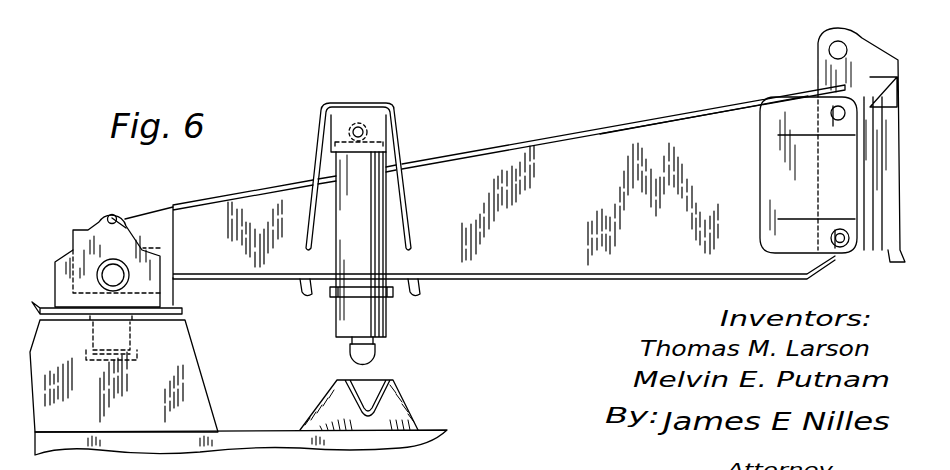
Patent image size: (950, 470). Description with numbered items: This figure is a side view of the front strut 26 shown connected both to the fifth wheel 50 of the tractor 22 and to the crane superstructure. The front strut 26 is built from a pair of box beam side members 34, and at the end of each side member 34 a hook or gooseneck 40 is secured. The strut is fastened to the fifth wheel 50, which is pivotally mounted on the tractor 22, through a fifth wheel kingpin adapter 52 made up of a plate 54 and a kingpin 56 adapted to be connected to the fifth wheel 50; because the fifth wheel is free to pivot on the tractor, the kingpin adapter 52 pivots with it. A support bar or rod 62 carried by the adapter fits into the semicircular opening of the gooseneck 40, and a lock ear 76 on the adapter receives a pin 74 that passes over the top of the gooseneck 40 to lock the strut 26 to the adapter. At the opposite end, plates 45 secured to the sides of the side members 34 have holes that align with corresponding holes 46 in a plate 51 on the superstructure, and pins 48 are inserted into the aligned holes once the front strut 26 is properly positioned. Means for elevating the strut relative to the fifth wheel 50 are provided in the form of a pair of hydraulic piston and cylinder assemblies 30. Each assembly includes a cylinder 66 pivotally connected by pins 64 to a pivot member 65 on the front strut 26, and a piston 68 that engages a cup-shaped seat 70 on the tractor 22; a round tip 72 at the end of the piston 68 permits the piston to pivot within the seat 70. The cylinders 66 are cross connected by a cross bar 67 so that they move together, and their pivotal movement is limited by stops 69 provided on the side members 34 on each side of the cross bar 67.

The tractor 22 is at (255, 421).
The front strut 26 is at (536, 129).
The hydraulic piston and cylinder assembly 30 is at (319, 325).
The side member 34 is at (633, 120).
The gooseneck 40 is at (82, 231).
The plate 45 is at (772, 172).
The hole 46 is at (832, 118).
The pin 48 is at (836, 108).
The fifth wheel 50 is at (197, 371).
The plate 51 is at (860, 48).
The fifth wheel kingpin adapter 52 is at (190, 283).
The plate 54 is at (180, 312).
The kingpin 56 is at (93, 336).
The support bar 62 is at (120, 276).
The pin 64 is at (365, 130).
The pivot member 65 is at (323, 122).
The cylinder 66 is at (365, 259).
The cross bar 67 is at (374, 297).
The piston 68 is at (374, 342).
The stop 69 is at (303, 287).
The cup-shaped seat 70 is at (342, 381).
The round tip 72 is at (363, 352).
The pin 74 is at (113, 215).
The lock ear 76 is at (126, 221).